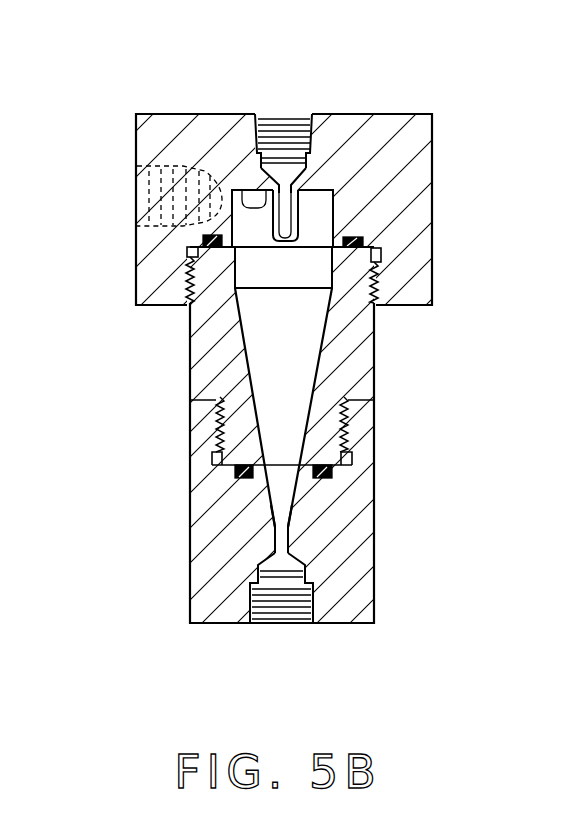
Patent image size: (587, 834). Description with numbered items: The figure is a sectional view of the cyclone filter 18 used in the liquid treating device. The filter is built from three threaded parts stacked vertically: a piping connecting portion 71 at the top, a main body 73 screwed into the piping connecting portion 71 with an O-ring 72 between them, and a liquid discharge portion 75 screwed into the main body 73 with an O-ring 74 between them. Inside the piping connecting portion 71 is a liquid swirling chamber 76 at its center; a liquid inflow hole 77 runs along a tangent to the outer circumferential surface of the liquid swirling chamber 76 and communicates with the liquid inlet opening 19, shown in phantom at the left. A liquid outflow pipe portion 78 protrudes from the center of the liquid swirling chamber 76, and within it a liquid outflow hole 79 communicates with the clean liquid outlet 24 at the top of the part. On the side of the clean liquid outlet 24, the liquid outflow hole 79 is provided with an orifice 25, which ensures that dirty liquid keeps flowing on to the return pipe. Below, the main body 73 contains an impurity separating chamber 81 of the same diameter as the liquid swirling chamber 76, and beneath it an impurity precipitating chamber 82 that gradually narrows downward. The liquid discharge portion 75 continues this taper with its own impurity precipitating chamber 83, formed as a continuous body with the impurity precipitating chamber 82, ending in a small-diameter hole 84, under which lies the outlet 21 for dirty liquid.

The cyclone filter 18 is at (418, 92).
The liquid inlet opening 19 is at (135, 200).
The outlet for dirty liquid 21 is at (286, 615).
The clean liquid outlet 24 is at (296, 145).
The orifice 25 is at (281, 192).
The piping connecting portion 71 is at (358, 120).
The O-ring 72 is at (363, 238).
The main body 73 is at (375, 347).
The O-ring 74 is at (334, 471).
The liquid discharge portion 75 is at (370, 556).
The liquid swirling chamber 76 is at (322, 192).
The liquid inflow hole 77 is at (253, 195).
The liquid outflow pipe portion 78 is at (312, 215).
The liquid outflow hole 79 is at (283, 225).
The impurity separating chamber 81 is at (316, 273).
The impurity precipitating chamber 82 is at (290, 368).
The impurity precipitating chamber 83 is at (283, 498).
The small-diameter hole 84 is at (287, 545).